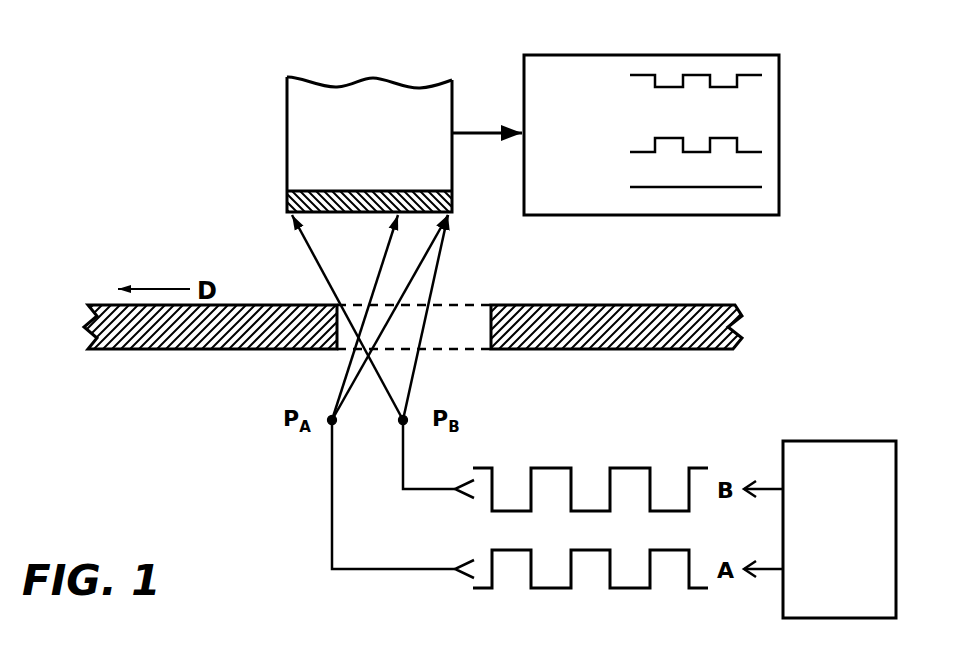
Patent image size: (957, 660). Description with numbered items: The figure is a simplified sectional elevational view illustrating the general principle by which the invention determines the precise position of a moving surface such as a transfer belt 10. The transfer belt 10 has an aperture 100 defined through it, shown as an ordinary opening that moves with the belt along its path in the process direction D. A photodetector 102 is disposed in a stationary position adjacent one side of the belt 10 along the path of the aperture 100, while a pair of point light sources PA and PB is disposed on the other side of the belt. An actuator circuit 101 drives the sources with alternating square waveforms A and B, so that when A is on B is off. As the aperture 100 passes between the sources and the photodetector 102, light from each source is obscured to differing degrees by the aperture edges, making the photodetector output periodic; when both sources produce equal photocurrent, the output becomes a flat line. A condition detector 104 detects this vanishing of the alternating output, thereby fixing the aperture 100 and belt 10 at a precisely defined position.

The transfer belt 10 is at (655, 315).
The aperture 100 is at (468, 303).
The actuator circuit 101 is at (839, 529).
The photodetector 102 is at (296, 122).
The condition detector 104 is at (667, 55).